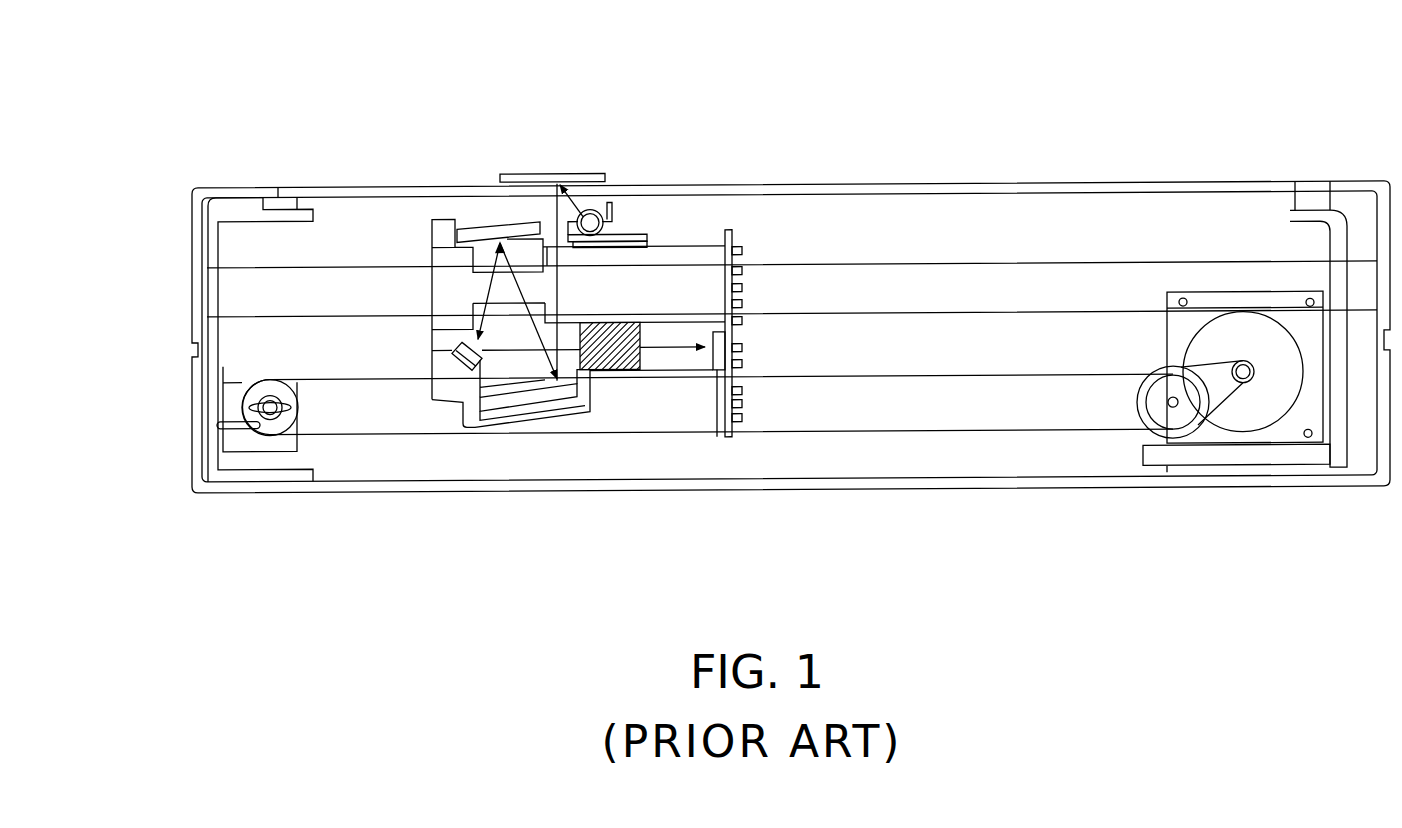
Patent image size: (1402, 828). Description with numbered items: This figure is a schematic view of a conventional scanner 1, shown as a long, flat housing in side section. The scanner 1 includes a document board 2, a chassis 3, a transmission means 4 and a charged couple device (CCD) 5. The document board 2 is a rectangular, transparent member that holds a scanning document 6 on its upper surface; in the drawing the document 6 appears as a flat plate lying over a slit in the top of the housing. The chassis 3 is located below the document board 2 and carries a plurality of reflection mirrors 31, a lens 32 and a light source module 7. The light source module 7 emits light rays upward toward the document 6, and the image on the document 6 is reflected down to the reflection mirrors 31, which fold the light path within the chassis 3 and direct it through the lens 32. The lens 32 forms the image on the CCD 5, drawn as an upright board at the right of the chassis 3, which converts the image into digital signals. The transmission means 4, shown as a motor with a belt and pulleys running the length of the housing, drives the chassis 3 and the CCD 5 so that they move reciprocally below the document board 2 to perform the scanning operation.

The scanner 1 is at (176, 311).
The document board 2 is at (860, 195).
The chassis 3 is at (430, 350).
The reflection mirrors 31 is at (483, 233).
The lens 32 is at (610, 373).
The transmission means 4 is at (1237, 428).
The charged couple device (CCD) 5 is at (718, 375).
The scanning document 6 is at (566, 184).
The light source module 7 is at (599, 220).